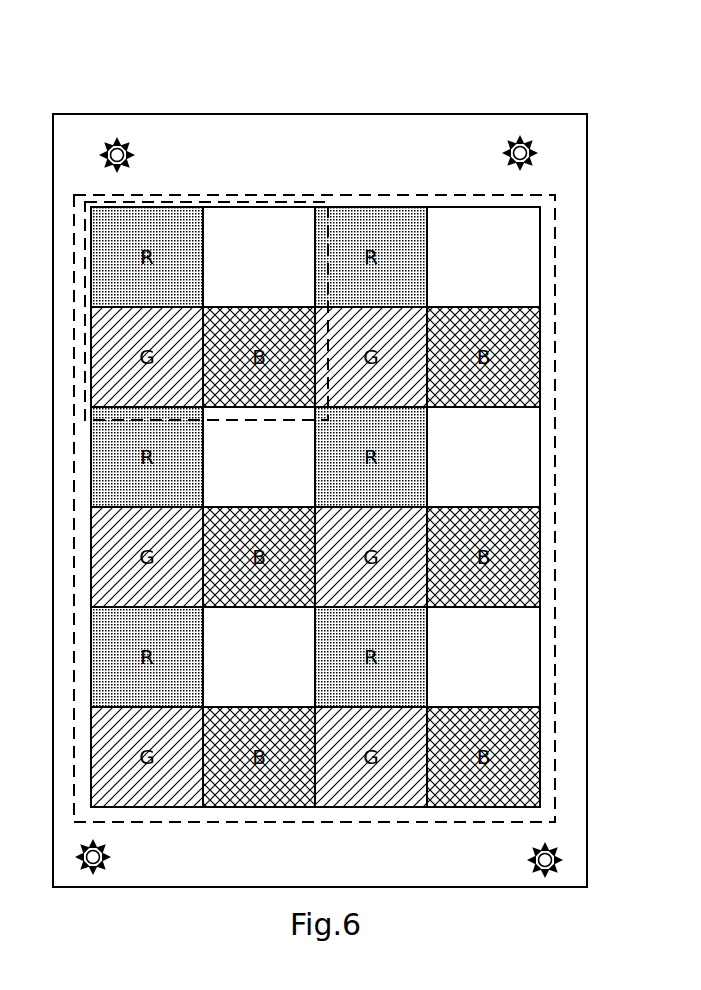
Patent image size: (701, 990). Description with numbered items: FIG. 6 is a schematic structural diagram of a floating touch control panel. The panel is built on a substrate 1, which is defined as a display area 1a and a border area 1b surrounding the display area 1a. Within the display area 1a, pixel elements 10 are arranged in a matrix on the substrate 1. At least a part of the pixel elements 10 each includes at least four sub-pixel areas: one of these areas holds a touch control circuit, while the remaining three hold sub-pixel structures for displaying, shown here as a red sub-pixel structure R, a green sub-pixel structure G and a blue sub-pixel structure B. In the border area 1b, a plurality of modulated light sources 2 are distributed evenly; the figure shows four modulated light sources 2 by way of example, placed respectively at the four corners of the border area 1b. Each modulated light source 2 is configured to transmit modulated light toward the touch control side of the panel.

The substrate 1 is at (278, 113).
The display area 1a is at (421, 197).
The border area 1b is at (360, 147).
The pixel element 10 is at (215, 197).
The modulated light source 2 is at (530, 140).